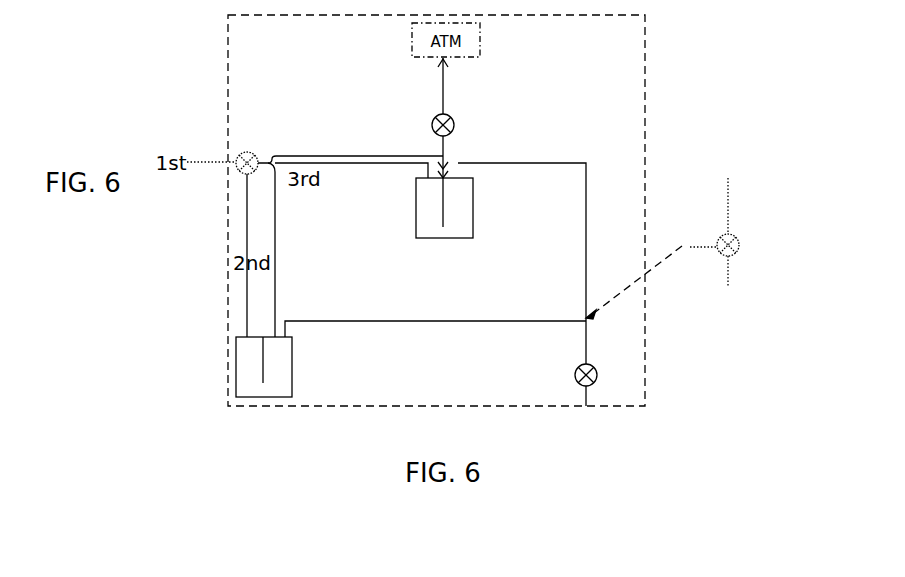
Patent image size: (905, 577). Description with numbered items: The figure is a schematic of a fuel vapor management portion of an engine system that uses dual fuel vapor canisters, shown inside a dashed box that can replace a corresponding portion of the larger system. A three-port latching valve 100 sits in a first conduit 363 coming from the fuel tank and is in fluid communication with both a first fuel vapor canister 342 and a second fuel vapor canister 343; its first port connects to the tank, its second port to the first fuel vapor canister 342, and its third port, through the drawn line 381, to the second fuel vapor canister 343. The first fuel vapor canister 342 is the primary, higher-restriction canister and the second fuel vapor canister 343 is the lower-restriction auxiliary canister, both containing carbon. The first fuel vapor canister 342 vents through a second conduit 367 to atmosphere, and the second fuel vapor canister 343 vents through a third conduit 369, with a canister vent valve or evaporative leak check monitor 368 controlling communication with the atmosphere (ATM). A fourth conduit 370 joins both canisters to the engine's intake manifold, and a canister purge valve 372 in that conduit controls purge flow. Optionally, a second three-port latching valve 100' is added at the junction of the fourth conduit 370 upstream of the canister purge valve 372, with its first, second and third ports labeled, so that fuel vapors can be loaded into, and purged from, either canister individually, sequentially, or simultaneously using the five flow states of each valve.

The three-port latching valve 100 is at (277, 134).
The second three-port latching valve 100' is at (745, 238).
The first conduit 363 is at (234, 163).
The second conduit 367 is at (276, 219).
The third pipe 381 is at (337, 156).
The canister vent valve or evaporative leak check monitor 368 is at (454, 117).
The third conduit 369 is at (448, 162).
The second fuel vapor canister 343 is at (473, 227).
The first fuel vapor canister 342 is at (292, 367).
The fourth conduit 370 is at (585, 265).
The canister purge valve 372 is at (594, 367).